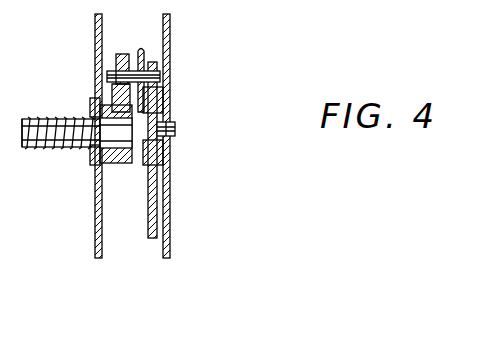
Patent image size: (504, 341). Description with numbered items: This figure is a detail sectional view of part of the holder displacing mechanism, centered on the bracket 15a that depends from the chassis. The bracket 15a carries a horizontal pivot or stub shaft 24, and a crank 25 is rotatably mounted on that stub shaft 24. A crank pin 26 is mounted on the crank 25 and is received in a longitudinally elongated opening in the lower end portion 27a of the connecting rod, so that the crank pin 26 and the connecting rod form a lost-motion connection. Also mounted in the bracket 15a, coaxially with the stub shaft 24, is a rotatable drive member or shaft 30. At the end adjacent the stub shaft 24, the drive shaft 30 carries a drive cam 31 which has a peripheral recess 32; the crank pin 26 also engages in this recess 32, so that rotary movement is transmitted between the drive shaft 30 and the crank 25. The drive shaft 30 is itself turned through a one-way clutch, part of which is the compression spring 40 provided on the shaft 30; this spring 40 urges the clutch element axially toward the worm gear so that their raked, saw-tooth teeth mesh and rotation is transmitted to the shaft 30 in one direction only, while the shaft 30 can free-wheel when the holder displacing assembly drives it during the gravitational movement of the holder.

The bracket 15a is at (100, 248).
The stub shaft 24 is at (173, 123).
The crank 25 is at (170, 157).
The crank pin 26 is at (110, 77).
The lower end portion 27a is at (142, 50).
The drive member or shaft 30 is at (48, 117).
The drive cam 31 is at (122, 158).
The peripheral recess 32 is at (116, 55).
The compression spring 40 is at (63, 147).